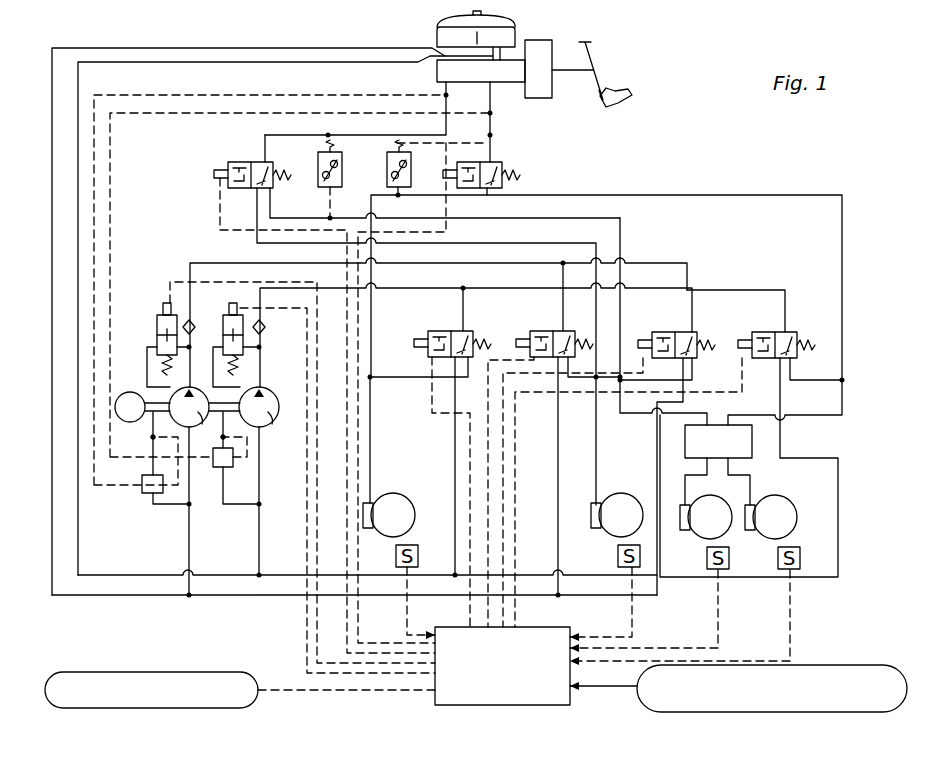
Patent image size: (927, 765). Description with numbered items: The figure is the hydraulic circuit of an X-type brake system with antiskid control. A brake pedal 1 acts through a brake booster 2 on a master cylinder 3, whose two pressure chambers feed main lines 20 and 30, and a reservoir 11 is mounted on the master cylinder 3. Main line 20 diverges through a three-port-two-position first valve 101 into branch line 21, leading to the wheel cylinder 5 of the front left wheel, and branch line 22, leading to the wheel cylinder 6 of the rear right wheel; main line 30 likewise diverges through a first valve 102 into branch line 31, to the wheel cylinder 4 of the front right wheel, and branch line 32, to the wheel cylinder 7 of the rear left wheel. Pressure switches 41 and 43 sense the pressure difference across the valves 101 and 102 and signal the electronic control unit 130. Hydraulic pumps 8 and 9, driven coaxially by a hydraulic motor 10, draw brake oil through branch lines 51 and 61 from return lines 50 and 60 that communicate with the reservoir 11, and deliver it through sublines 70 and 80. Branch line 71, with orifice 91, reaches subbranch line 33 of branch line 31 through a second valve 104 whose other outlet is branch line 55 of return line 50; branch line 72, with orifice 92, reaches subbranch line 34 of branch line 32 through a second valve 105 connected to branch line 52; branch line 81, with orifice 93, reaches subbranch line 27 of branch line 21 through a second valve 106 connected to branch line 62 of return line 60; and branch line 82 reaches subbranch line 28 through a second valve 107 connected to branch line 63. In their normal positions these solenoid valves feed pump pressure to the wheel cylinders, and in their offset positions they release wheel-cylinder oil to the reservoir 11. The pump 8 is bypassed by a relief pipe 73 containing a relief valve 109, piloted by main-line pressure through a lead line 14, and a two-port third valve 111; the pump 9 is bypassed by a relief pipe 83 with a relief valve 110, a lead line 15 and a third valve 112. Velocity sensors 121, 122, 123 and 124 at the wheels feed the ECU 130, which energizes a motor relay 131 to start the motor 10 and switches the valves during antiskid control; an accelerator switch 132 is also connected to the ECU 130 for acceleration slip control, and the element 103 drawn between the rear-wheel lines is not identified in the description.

The brake pedal 1 is at (606, 106).
The brake booster 2 is at (540, 98).
The master cylinder 3 is at (511, 82).
The wheel cylinder of front right wheel 4 is at (368, 528).
The wheel cylinder of front left wheel 5 is at (593, 528).
The wheel cylinder of rear right wheel 6 is at (684, 530).
The wheel cylinder of rear left wheel 7 is at (750, 528).
The hydraulic pump 8 is at (270, 424).
The hydraulic pump 9 is at (189, 491).
The hydraulic motor 10 is at (122, 400).
The reservoir 11 is at (515, 32).
The lead line 14 is at (108, 243).
The lead line 15 is at (104, 202).
The main line 20 is at (446, 132).
The branch line 21 is at (306, 246).
The branch line 22 is at (298, 222).
The subbranch line 27 is at (584, 384).
The subbranch line 28 is at (632, 413).
The main line 30 is at (490, 136).
The branch line 31 is at (404, 200).
The branch line 32 is at (606, 197).
The subbranch line 33 is at (394, 377).
The subbranch line 34 is at (824, 360).
The pressure switch 41 is at (342, 168).
The pressure switch 43 is at (410, 166).
The return line 50 is at (252, 62).
The branch line 51 is at (259, 544).
The branch line 52 is at (838, 520).
The branch line 55 is at (455, 458).
The return line 60 is at (264, 48).
The branch line 61 is at (189, 544).
The branch line 62 is at (568, 482).
The branch line 63 is at (652, 466).
The subline 70 is at (316, 290).
The branch line 71 is at (466, 312).
The branch line 72 is at (789, 290).
The relief pipe 73 is at (219, 388).
The subline 80 is at (250, 264).
The branch line 81 is at (560, 308).
The branch line 82 is at (673, 314).
The relief pipe 83 is at (149, 388).
The orifice 91 is at (454, 330).
The orifice 92 is at (776, 316).
The orifice 93 is at (548, 328).
The first valve 101 is at (222, 194).
The first valve 102 is at (506, 168).
The pressure sensor 103 is at (750, 458).
The second valve 104 is at (474, 338).
The second valve 105 is at (796, 332).
The second valve 106 is at (584, 318).
The second valve 107 is at (693, 334).
The relief valve 109 is at (220, 470).
The relief valve 110 is at (146, 498).
The third valve 111 is at (230, 318).
The third valve 112 is at (158, 318).
The velocity sensor 121 is at (430, 548).
The velocity sensor 122 is at (640, 588).
The velocity sensor 123 is at (728, 562).
The velocity sensor 124 is at (800, 555).
The electronic control unit 130 is at (570, 702).
The motor relay 131 is at (106, 670).
The accelerator switch 132 is at (862, 664).